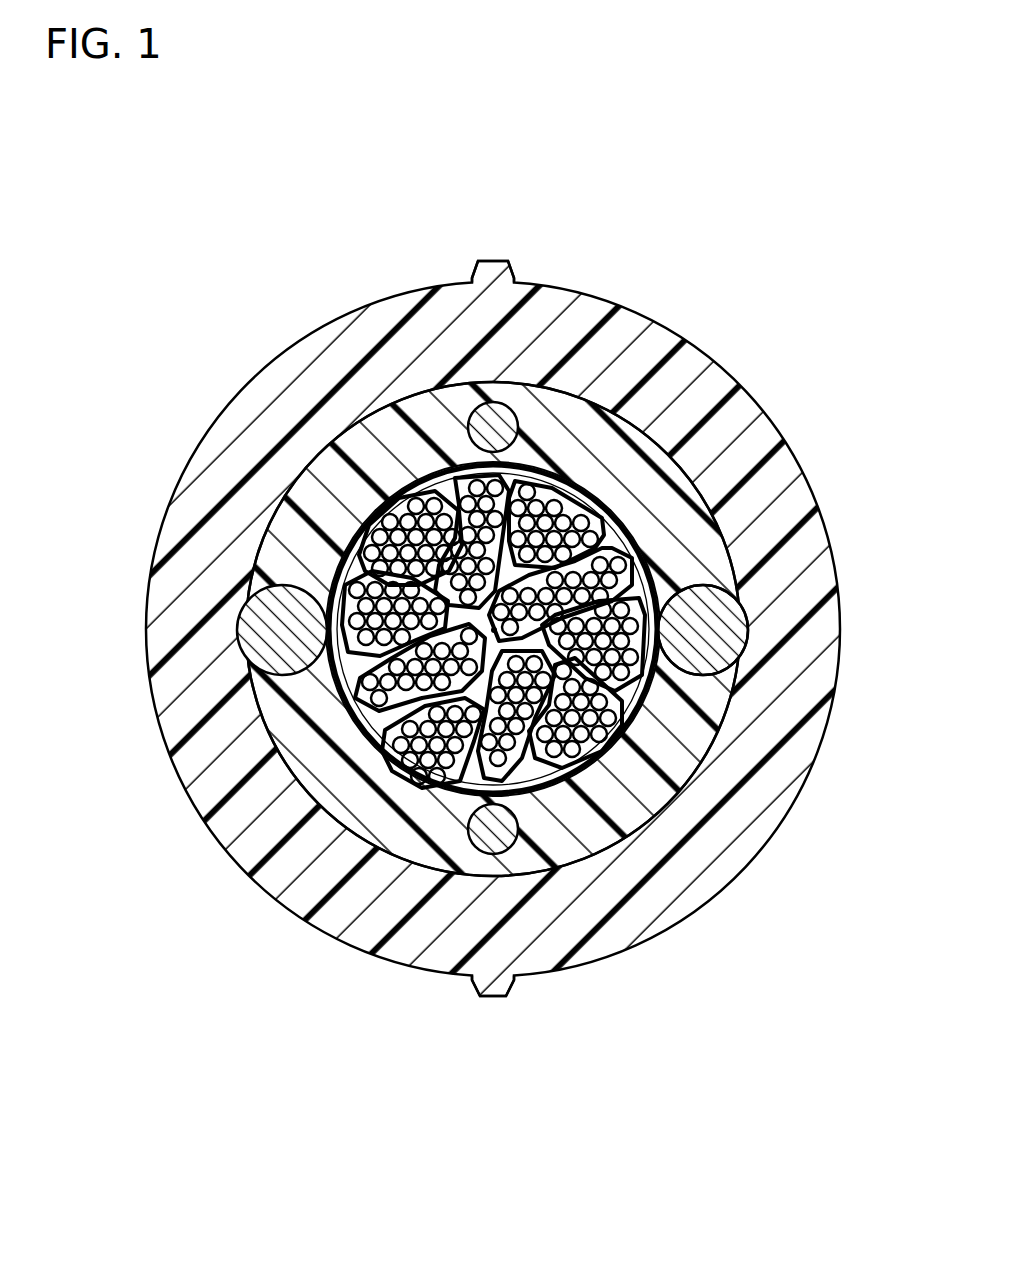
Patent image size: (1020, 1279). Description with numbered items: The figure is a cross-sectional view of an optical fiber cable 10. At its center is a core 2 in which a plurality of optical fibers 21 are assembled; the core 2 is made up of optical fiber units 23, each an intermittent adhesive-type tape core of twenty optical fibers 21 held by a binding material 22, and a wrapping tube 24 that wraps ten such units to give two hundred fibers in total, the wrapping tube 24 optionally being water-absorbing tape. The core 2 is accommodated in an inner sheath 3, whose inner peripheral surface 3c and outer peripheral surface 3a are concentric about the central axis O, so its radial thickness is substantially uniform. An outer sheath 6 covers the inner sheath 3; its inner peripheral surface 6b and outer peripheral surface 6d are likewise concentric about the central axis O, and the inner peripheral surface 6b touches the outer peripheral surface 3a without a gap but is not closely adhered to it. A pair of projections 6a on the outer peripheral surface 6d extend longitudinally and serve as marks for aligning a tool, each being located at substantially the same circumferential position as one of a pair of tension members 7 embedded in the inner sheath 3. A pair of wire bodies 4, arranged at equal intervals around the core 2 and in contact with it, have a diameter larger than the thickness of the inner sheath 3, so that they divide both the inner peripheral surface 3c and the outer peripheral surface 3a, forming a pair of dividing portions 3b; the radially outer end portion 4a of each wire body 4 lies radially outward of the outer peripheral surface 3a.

The optical fiber cable 10 is at (178, 215).
The outer sheath 6 is at (374, 343).
The projection 6a is at (493, 267).
The inner peripheral surface of the outer sheath 6b is at (633, 433).
The outer peripheral surface of the outer sheath 6d is at (643, 312).
The tension member 7 is at (493, 425).
The inner sheath 3 is at (693, 736).
The outer peripheral surface of the inner sheath 3a is at (680, 465).
The dividing portion 3b is at (706, 584).
The inner peripheral surface of the inner sheath 3c is at (377, 735).
The wire body 4 is at (708, 628).
The radially outer end portion 4a is at (748, 640).
The core 2 is at (640, 540).
The optical fiber 21 is at (446, 772).
The binding material 22 is at (467, 786).
The optical fiber unit 23 is at (442, 1048).
The wrapping tube 24 is at (557, 780).
The central axis O is at (490, 632).